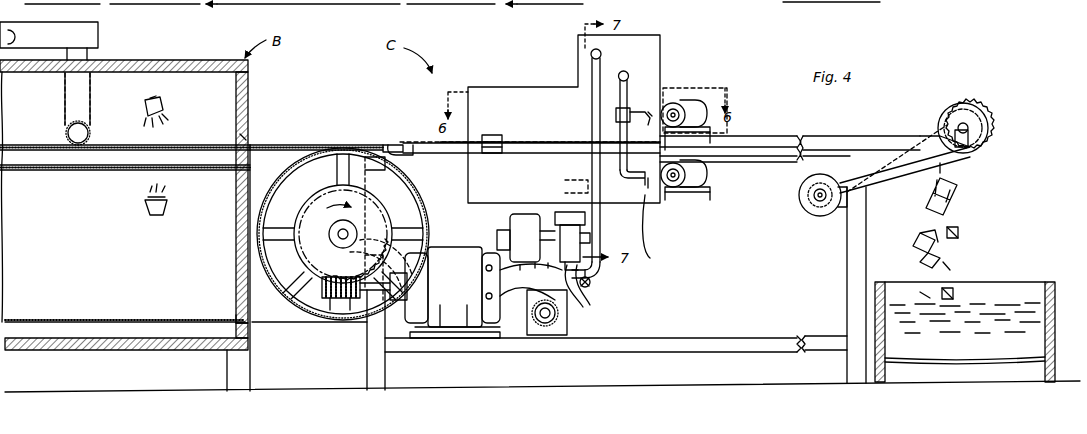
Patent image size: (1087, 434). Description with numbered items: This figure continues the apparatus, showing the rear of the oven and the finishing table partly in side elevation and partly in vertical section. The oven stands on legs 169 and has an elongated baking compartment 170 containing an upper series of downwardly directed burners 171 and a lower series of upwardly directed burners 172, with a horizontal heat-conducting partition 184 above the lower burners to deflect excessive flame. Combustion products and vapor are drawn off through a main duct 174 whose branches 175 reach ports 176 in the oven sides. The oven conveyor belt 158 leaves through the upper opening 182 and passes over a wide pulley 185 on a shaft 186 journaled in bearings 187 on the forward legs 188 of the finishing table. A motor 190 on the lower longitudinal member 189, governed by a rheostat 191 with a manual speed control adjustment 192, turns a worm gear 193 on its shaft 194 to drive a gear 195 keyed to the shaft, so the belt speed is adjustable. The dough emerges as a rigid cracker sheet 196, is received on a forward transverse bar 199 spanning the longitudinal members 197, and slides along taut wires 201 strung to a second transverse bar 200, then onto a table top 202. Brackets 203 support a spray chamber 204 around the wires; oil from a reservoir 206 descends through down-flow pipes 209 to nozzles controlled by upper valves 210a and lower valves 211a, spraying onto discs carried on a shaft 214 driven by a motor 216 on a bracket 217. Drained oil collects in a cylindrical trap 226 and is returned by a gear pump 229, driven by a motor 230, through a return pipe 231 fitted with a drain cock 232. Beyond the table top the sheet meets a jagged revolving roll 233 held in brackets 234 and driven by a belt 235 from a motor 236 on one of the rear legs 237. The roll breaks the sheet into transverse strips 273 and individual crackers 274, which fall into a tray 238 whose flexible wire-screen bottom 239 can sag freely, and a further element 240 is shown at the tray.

The oven conveyor belt 158 is at (262, 145).
The legs 169 is at (232, 370).
The baking compartment 170 is at (248, 103).
The upper burners 171 is at (162, 98).
The lower burners 172 is at (168, 212).
The main duct 174 is at (49, 35).
The branches 175 is at (82, 53).
The ports 176 is at (89, 133).
The upper opening 182 is at (240, 137).
The heat-conducting partition 184 is at (55, 171).
The second drum or wide pulley 185 is at (240, 313).
The shaft 186 is at (336, 240).
The bearings 187 is at (420, 186).
The forward legs 188 is at (387, 373).
The lower longitudinal member 189 is at (683, 336).
The motor 190 is at (452, 292).
The rheostat 191 is at (555, 340).
The manual speed control adjustment 192 is at (565, 315).
The worm gear 193 is at (324, 308).
The shaft of the motor 194 is at (372, 313).
The gear 195 is at (434, 235).
The rigid cracker sheet 196 is at (300, 145).
The longitudinal members 197 is at (765, 163).
The forward transverse bar 199 is at (405, 146).
The transverse bar 200 is at (733, 147).
The taut wires 201 is at (426, 146).
The table top 202 is at (817, 140).
The brackets 203 is at (492, 135).
The spray chamber 204 is at (548, 96).
The reservoir 206 is at (653, 50).
The down-flow pipes 209 is at (636, 80).
The valves 210a is at (652, 110).
The valves 211a is at (594, 247).
The shaft 214 is at (668, 102).
The motor 216 is at (696, 102).
The bracket 217 is at (738, 135).
The cylindrical trap 226 is at (578, 217).
The gear pump 229 is at (588, 237).
The motor 230 is at (515, 228).
The return pipe 231 is at (585, 182).
The drain cock 232 is at (591, 285).
The revolving roll 233 is at (968, 105).
The brackets 234 is at (975, 131).
The belt 235 is at (923, 137).
The motor 236 is at (812, 212).
The rear legs 237 is at (847, 258).
The tray 238 is at (1068, 258).
The tray bottom 239 is at (965, 359).
The tank base 240 is at (1046, 370).
The transverse strips 273 is at (963, 184).
The individual crackers 274 is at (952, 288).